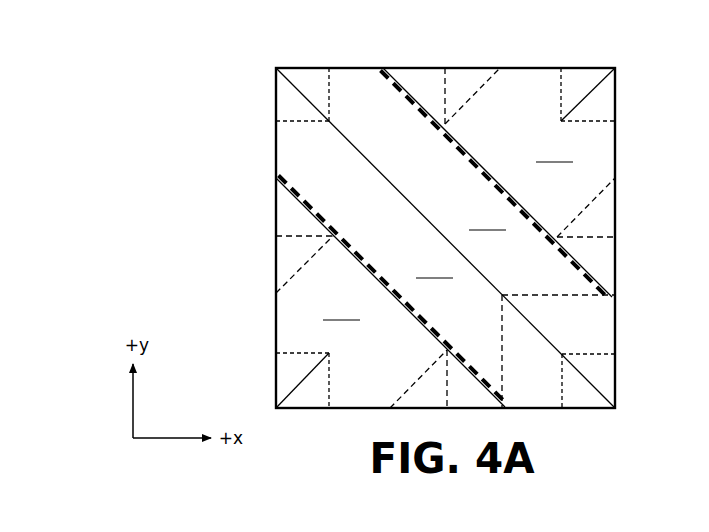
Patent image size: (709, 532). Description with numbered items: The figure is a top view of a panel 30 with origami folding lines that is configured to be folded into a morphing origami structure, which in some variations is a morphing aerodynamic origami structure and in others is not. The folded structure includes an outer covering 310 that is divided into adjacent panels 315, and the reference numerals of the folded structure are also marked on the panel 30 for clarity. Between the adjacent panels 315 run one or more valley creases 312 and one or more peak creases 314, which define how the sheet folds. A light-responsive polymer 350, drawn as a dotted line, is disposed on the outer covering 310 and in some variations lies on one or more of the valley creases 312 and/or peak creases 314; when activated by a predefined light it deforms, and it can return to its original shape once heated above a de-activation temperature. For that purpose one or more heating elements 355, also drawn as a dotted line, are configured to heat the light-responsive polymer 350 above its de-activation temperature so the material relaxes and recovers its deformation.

The panel 30 is at (621, 48).
The outer covering 310 is at (462, 67).
The valley creases 312 is at (321, 83).
The peak creases 314 is at (297, 272).
The panels 315 is at (448, 231).
The light-responsive polymer 350 is at (281, 186).
The heating elements 355 is at (277, 164).